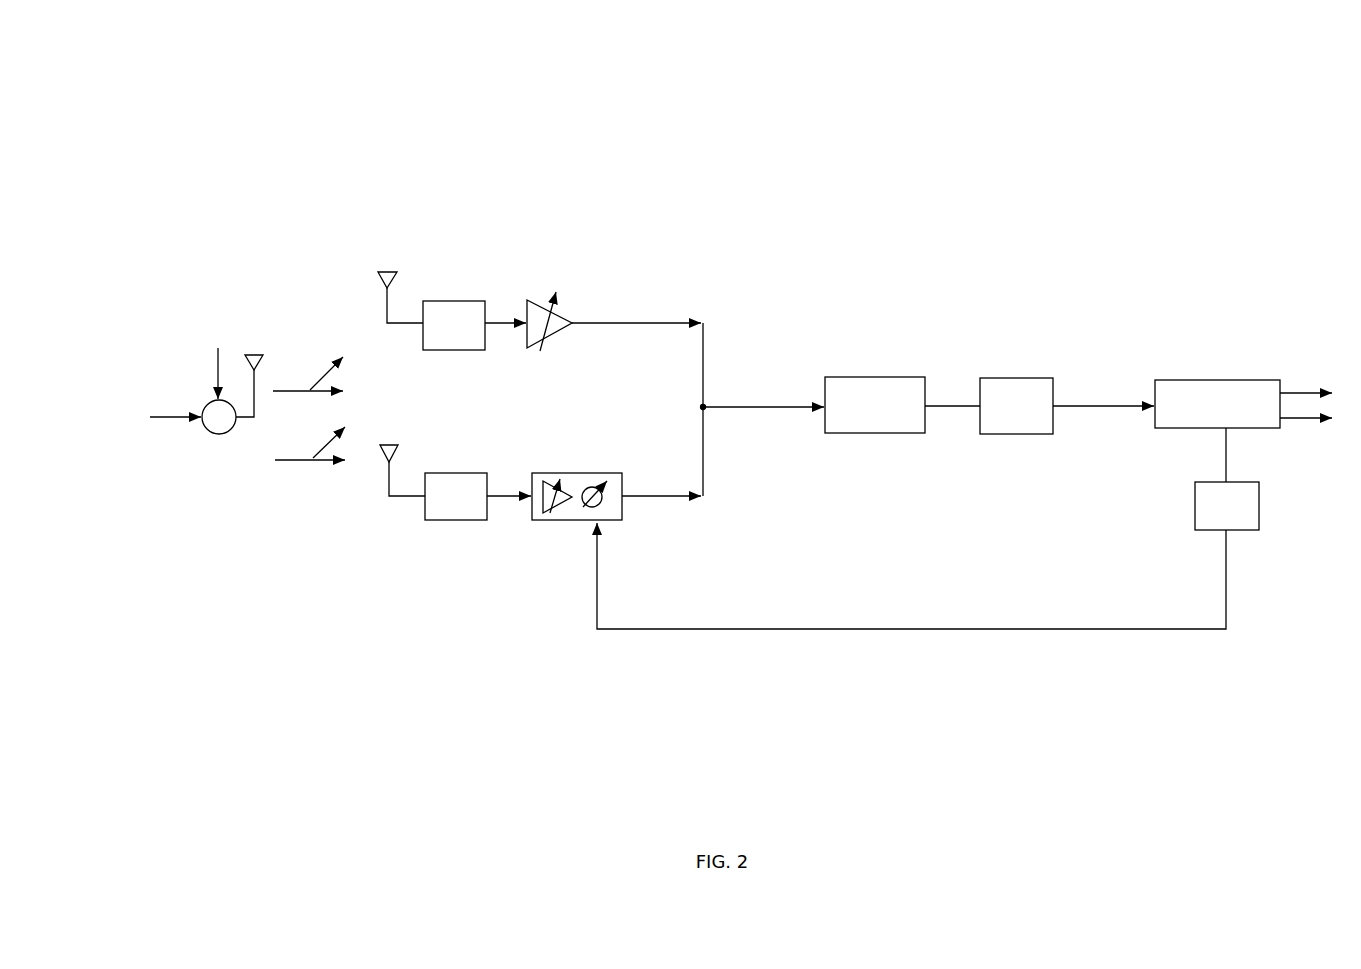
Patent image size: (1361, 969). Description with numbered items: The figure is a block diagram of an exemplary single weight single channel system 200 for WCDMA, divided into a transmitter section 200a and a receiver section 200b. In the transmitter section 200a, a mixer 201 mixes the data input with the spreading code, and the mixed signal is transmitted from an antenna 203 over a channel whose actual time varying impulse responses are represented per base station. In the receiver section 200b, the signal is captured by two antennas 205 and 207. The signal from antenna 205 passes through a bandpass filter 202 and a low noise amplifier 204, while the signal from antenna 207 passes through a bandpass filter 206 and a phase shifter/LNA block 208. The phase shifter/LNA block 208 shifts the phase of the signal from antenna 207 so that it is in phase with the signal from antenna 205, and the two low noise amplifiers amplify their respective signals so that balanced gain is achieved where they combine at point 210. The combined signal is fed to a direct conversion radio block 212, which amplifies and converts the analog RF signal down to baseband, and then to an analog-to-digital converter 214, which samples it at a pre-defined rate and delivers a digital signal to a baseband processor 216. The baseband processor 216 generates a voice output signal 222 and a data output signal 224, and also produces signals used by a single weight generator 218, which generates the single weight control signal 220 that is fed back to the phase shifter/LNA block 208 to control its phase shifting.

The single weight single channel system 200 is at (182, 118).
The transmitter section 200a is at (276, 284).
The receiver section 200b is at (736, 334).
The mixer 201 is at (201, 406).
The antenna 203 is at (257, 351).
The antenna 205 is at (396, 269).
The antenna 207 is at (391, 443).
The bandpass filter 202 is at (466, 300).
The bandpass filter 206 is at (449, 472).
The low noise amplifier 204 is at (536, 300).
The phase shifter/LNA block 208 is at (542, 472).
The point 210 is at (701, 407).
The direct conversion radio block 212 is at (876, 377).
The analog-to-digital converter 214 is at (1017, 377).
The baseband processor 216 is at (1197, 380).
The single weight generator 218 is at (1194, 508).
The single weight control signal 220 is at (978, 628).
The voice output signal 222 is at (1299, 392).
The data output signal 224 is at (1292, 422).